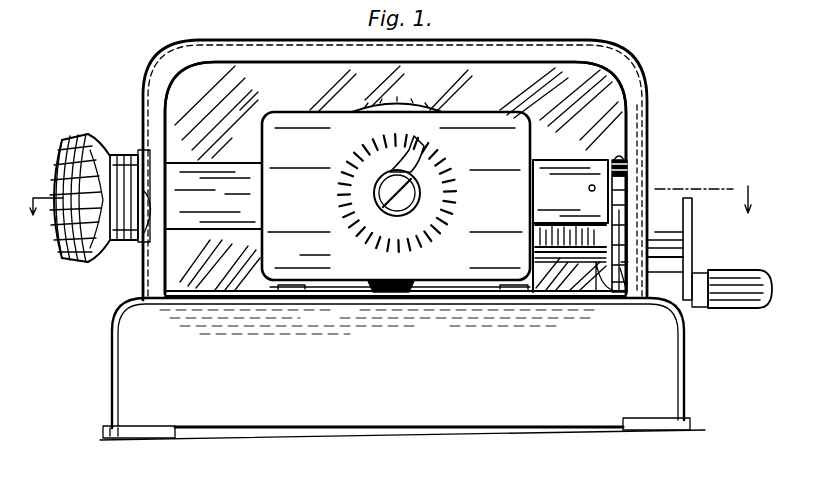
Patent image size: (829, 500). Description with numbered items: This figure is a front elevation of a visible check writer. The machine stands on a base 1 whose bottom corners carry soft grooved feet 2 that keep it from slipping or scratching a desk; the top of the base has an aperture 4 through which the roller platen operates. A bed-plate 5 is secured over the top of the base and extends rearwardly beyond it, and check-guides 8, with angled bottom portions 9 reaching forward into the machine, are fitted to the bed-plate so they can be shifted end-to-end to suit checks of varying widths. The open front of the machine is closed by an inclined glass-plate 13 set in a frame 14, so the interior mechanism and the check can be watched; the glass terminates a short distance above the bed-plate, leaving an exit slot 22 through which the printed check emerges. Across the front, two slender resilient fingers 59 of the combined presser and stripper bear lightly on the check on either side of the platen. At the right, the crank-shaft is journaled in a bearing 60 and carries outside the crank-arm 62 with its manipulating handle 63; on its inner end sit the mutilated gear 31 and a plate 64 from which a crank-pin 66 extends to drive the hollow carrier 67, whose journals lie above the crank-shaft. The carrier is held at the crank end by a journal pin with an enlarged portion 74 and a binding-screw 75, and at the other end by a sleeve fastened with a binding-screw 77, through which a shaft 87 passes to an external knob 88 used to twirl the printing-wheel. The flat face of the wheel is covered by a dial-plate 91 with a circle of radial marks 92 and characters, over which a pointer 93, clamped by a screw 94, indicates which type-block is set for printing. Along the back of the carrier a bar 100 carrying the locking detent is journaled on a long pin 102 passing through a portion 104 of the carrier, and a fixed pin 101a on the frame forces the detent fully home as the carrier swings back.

The base 1 is at (300, 410).
The grooved feet 2 is at (143, 436).
The aperture 4 is at (388, 215).
The bed-plate 5 is at (250, 300).
The check-guides 8 is at (287, 292).
The bottom portions 9 is at (334, 292).
The glass-plate 13 is at (605, 114).
The frame 14 is at (557, 47).
The exit slot 22 is at (200, 295).
The mutilated gear 31 is at (692, 257).
The resilient fingers 59 is at (405, 298).
The bearing 60 is at (673, 238).
The crank-arm 62 is at (692, 239).
The manipulating handle 63 is at (733, 312).
The plate 64 is at (623, 272).
The crank-pin 66 is at (622, 204).
The carrier 67 is at (545, 167).
The enlarged portion 74 is at (622, 172).
The binding-screw 75 is at (588, 189).
The binding-screw 77 is at (194, 196).
The shaft 87 is at (147, 247).
The knob 88 is at (82, 262).
The dial-plate 91 is at (396, 188).
The radial notches 92 is at (393, 249).
The pointer 93 is at (400, 167).
The clamping screw 94 is at (378, 197).
The bar 100 is at (583, 241).
The pin 101a is at (619, 166).
The long pin 102 is at (553, 257).
The portion of the carrier 104 is at (620, 292).